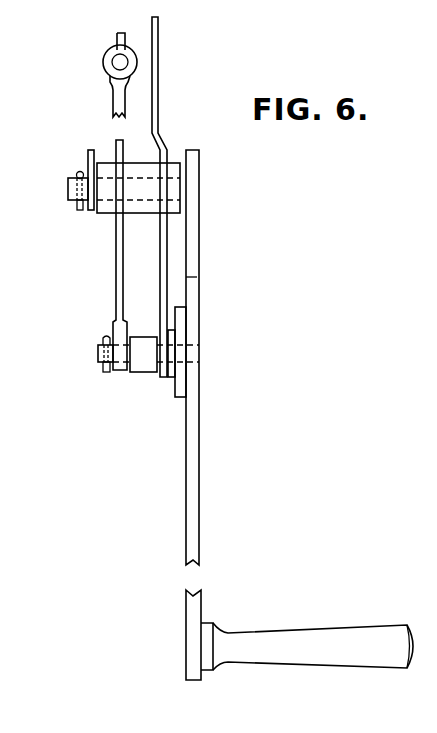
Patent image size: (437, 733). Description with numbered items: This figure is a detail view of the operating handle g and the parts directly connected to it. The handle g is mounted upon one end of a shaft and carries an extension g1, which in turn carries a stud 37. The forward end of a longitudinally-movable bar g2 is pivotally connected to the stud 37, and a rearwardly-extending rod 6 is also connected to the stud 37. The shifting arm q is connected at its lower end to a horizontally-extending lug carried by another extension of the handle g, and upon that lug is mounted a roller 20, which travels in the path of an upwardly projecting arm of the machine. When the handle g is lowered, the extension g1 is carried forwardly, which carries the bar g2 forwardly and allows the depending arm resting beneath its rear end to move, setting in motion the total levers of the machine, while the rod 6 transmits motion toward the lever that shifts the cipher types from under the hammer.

The rearwardly-extending rod 6 is at (123, 152).
The shifting arm q is at (87, 160).
The roller 20 is at (107, 210).
The longitudinally-movable bar g2 is at (168, 252).
The extension g1 is at (203, 308).
The stud 37 is at (98, 357).
The handle g is at (202, 442).